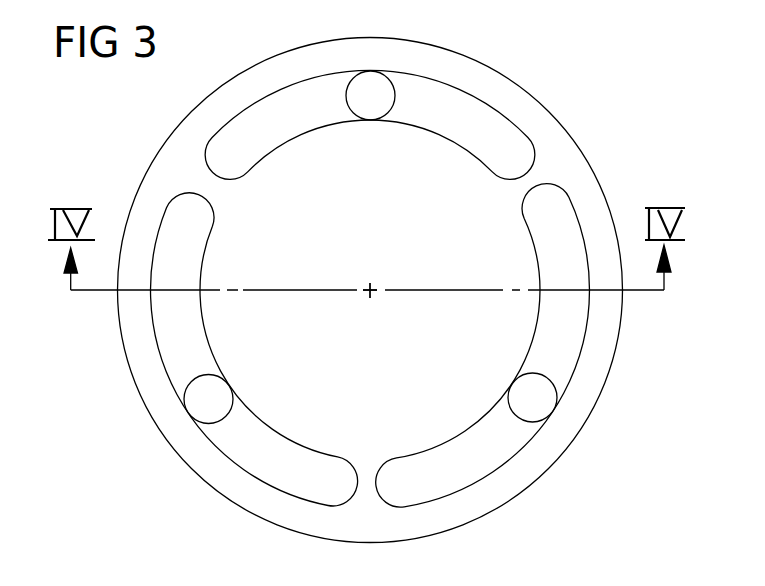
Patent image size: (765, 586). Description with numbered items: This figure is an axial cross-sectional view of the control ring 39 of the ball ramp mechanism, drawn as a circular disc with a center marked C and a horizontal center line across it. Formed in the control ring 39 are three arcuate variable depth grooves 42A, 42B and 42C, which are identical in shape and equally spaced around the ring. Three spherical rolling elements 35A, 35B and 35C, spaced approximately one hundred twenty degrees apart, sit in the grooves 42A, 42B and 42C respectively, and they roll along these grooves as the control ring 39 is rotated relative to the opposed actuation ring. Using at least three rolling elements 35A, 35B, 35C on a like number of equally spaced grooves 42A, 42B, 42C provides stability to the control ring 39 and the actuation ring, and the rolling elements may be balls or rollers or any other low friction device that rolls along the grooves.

The control ring 39 is at (573, 165).
The variable depth groove 42A is at (515, 143).
The variable depth groove 42B is at (570, 323).
The variable depth groove 42C is at (168, 338).
The spherical rolling element 35A is at (367, 87).
The spherical rolling element 35B is at (545, 398).
The spherical rolling element 35C is at (198, 400).
The center axis C is at (375, 282).